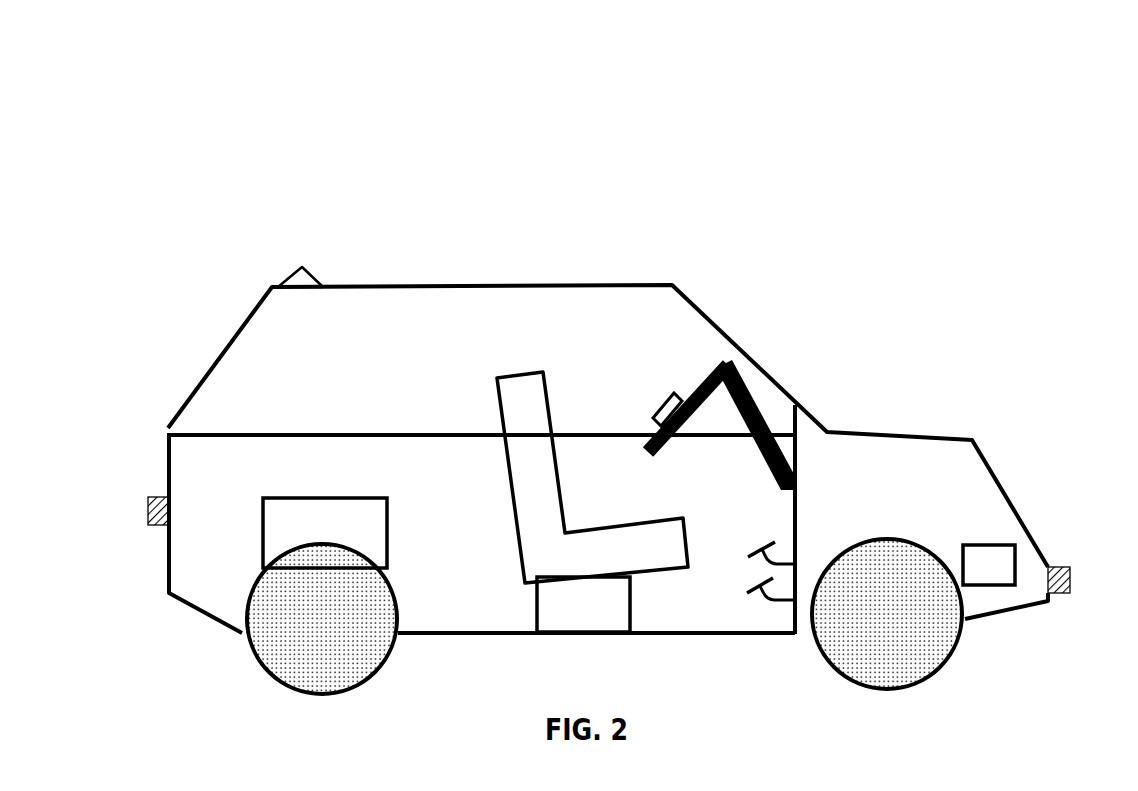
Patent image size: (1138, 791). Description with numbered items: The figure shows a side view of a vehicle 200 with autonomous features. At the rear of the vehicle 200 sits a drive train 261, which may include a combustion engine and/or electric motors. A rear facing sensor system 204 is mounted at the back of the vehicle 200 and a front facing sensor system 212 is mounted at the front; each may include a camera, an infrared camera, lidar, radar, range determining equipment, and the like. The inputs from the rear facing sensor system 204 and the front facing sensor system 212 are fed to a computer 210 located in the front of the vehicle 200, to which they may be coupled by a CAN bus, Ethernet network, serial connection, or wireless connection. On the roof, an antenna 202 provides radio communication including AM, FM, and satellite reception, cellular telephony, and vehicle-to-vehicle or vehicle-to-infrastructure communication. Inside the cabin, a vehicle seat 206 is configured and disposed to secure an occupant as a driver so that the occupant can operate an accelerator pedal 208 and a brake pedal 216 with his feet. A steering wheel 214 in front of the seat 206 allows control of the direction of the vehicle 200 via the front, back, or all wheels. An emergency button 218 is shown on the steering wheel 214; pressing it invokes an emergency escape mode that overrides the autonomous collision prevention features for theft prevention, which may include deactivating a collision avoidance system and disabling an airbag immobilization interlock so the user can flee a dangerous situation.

The vehicle 200 is at (248, 102).
The antenna 202 is at (299, 262).
The rear facing sensor system 204 is at (147, 512).
The vehicle seat 206 is at (522, 377).
The accelerator pedal 208 is at (762, 595).
The computer 210 is at (995, 565).
The front facing sensor system 212 is at (1057, 567).
The steering wheel 214 is at (697, 382).
The brake pedal 216 is at (768, 543).
The emergency button 218 is at (668, 401).
The drive train 261 is at (311, 528).